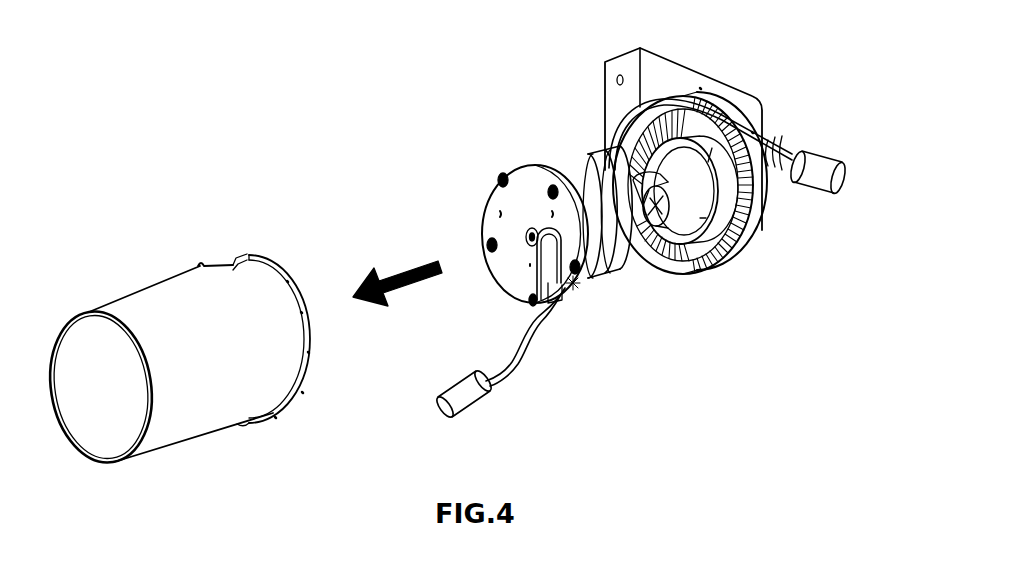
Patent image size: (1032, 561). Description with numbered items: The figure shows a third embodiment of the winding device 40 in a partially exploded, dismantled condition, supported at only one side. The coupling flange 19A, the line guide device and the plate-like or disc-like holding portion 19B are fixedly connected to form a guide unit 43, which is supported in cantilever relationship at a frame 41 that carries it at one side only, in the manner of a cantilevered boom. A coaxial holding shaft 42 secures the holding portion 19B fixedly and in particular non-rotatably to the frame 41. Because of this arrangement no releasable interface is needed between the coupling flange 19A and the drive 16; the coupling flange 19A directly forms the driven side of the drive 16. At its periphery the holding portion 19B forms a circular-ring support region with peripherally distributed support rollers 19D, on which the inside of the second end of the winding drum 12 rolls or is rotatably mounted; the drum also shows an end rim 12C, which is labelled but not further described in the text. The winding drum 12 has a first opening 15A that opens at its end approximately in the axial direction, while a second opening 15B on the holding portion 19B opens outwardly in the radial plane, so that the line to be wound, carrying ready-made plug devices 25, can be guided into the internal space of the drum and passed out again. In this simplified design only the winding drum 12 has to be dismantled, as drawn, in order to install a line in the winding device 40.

The winding drum 12 is at (195, 398).
The container flange 12C is at (281, 280).
The first aperture or opening 15A is at (231, 264).
The second aperture or opening 15B is at (580, 290).
The drive 16 is at (677, 90).
The coupling flange 19A is at (725, 263).
The holding portion 19B is at (493, 217).
The support rollers 19D is at (500, 173).
The plug devices 25 is at (483, 398).
The winding device 40 is at (630, 387).
The frame 41 is at (723, 95).
The holding shaft 42 is at (656, 248).
The guide unit 43 is at (630, 27).